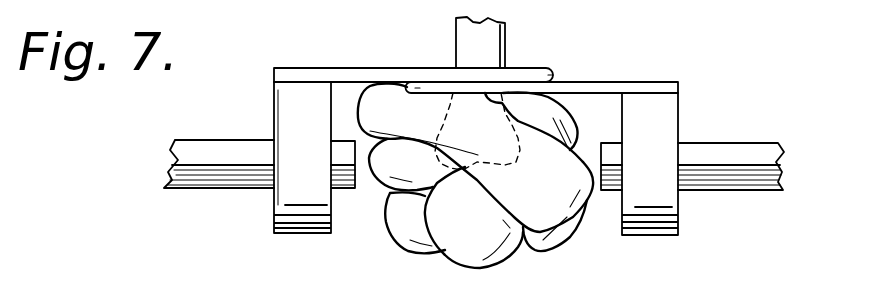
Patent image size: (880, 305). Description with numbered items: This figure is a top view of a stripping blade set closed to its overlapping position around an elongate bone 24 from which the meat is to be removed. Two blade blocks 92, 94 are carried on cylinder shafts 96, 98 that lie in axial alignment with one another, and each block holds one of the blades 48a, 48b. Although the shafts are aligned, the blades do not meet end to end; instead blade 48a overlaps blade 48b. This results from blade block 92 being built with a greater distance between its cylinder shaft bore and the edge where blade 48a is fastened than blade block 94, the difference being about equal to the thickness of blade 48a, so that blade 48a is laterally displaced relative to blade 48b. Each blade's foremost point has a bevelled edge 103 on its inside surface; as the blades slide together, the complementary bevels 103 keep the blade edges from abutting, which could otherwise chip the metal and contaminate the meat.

The elongate bone 24 is at (503, 35).
The blade 48a is at (360, 72).
The blade 48b is at (608, 82).
The bevelled edges 103 is at (420, 78).
The blade block 92 is at (283, 215).
The blade block 94 is at (672, 218).
The cylinder shaft 96 is at (210, 148).
The cylinder shaft 98 is at (764, 153).